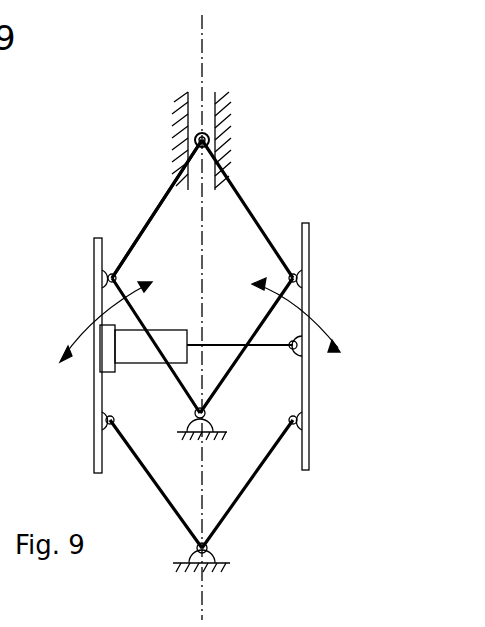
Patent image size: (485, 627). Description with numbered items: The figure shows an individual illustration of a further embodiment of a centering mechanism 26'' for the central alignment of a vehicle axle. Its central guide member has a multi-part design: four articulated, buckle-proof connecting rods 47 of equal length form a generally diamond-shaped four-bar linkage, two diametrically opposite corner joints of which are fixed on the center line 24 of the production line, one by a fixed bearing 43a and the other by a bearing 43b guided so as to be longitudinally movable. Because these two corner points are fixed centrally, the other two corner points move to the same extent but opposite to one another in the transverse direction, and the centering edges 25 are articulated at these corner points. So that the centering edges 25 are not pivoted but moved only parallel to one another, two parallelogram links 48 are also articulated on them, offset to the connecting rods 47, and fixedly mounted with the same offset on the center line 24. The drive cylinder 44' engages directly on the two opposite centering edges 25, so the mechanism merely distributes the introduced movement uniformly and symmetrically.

The center line 24 is at (200, 45).
The centering edges 25 is at (94, 262).
The centering mechanism 26'' is at (149, 189).
The fixed bearing 43a is at (210, 422).
The longitudinally movably guided bearing 43b is at (215, 122).
The drive cylinder 44' is at (196, 376).
The connecting rods 47 is at (257, 222).
The parallelogram links 48 is at (167, 502).